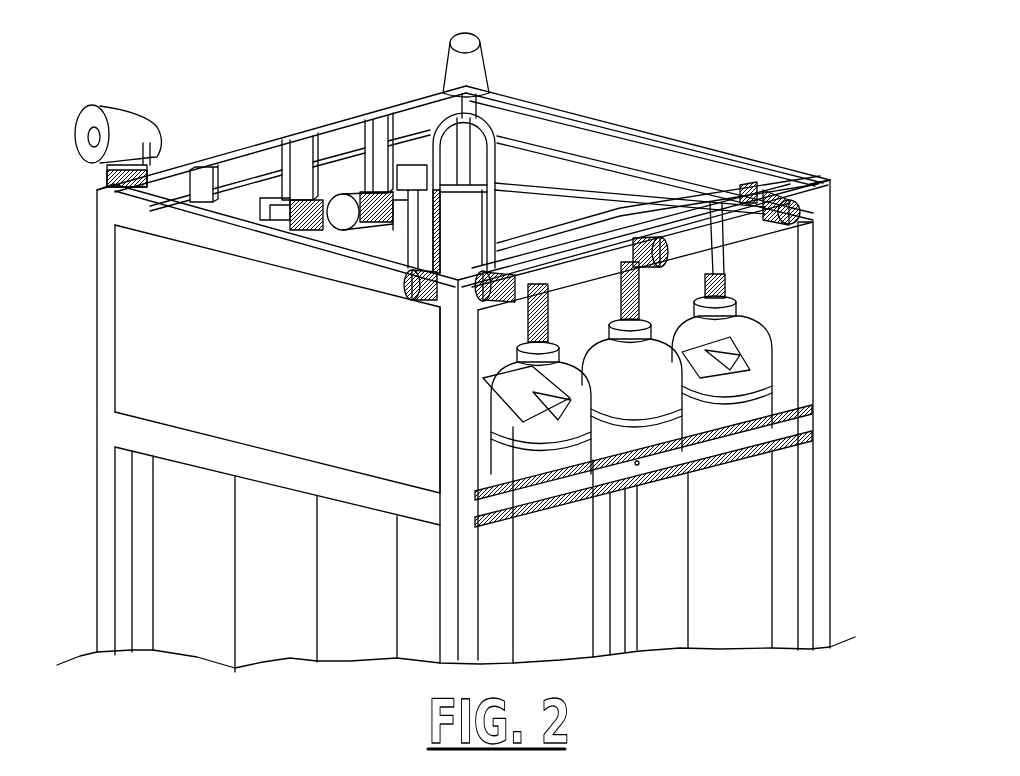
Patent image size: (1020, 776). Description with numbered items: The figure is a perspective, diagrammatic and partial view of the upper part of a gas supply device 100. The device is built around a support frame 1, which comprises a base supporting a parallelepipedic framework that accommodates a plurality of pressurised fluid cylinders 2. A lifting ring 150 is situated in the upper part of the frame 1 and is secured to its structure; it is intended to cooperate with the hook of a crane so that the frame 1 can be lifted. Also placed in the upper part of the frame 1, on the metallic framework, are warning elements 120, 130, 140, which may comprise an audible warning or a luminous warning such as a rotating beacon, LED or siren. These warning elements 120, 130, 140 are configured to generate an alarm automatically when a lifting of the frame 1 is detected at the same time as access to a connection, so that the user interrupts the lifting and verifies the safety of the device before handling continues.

The gas supply device 100 is at (746, 66).
The support frame 1 is at (102, 480).
The pressurised fluid cylinders 2 is at (585, 595).
The warning element 120 is at (745, 190).
The warning element 130 is at (489, 53).
The warning element 140 is at (152, 118).
The lifting ring 150 is at (438, 150).